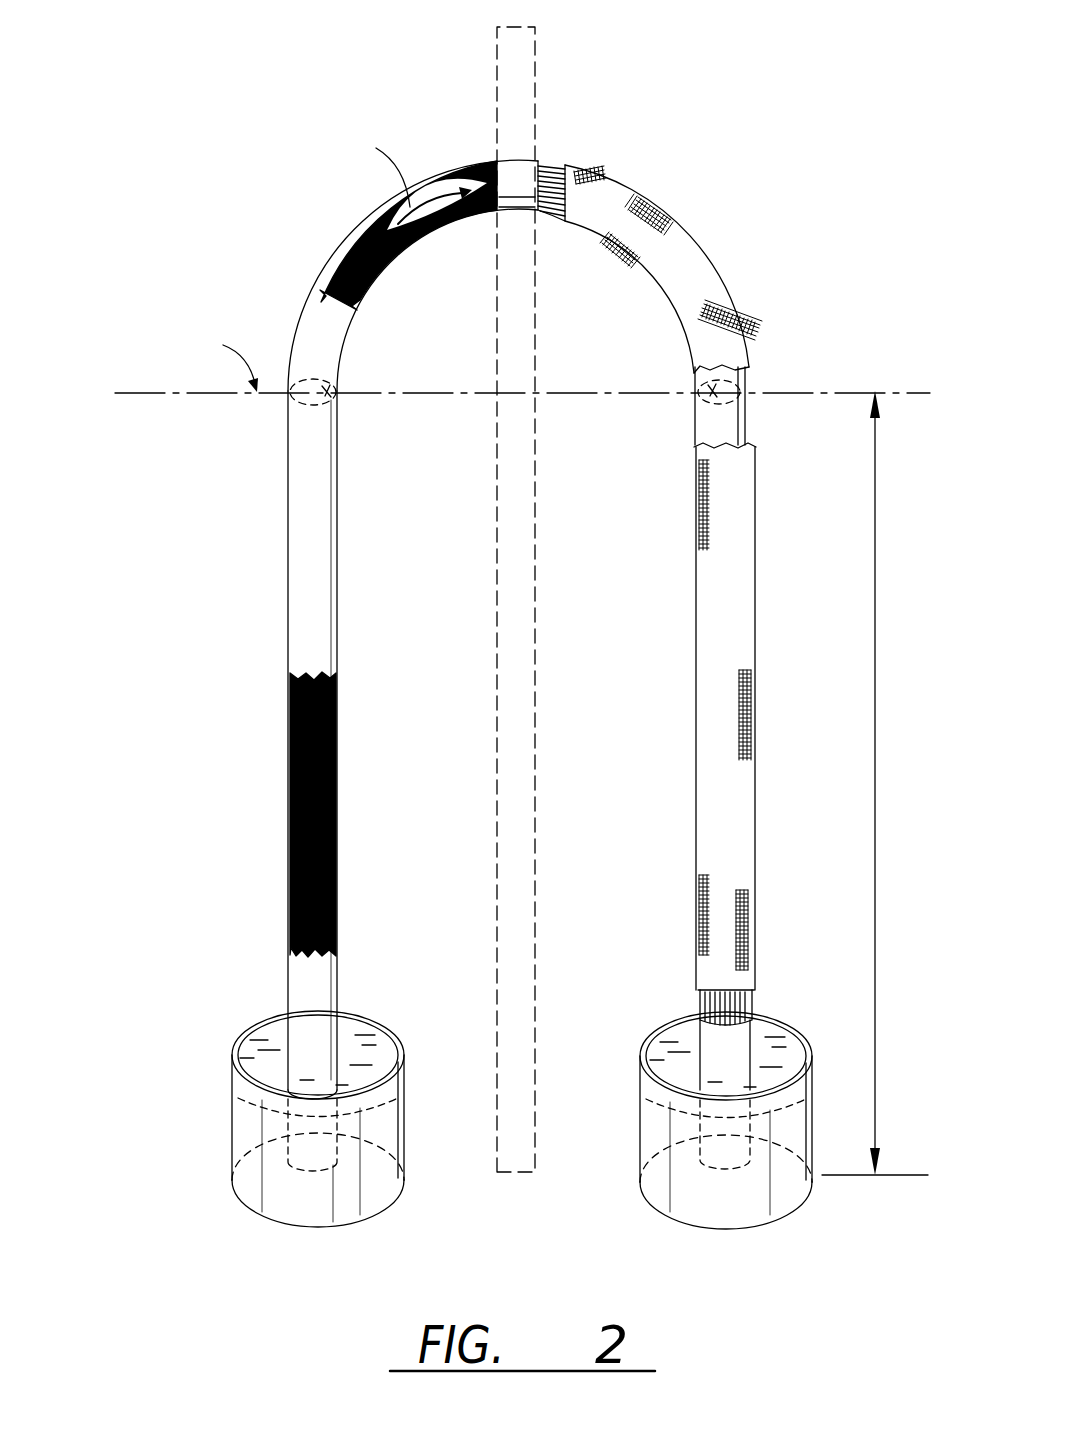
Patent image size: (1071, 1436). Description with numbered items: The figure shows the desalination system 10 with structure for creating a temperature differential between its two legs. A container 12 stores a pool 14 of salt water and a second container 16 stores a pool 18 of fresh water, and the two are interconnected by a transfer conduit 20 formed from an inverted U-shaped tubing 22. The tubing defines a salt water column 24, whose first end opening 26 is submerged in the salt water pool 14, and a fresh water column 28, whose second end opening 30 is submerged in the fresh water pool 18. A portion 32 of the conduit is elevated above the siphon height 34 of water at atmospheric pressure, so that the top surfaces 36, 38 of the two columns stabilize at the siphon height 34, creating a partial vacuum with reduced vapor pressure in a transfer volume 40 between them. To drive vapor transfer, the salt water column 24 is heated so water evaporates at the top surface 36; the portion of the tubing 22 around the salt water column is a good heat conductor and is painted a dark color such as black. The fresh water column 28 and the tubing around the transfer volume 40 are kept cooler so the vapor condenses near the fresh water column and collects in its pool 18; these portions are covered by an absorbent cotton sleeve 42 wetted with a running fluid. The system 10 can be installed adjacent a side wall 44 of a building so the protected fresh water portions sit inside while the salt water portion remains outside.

The desalination system 10 is at (692, 130).
The container 12 is at (287, 1091).
The pool of salt water 14 is at (376, 1051).
The container 16 is at (700, 1108).
The pool of fresh water 18 is at (777, 1051).
The transfer conduit 20 is at (276, 743).
The inverted U-shaped tubing 22 is at (400, 253).
The salt water column 24 is at (325, 560).
The first end opening 26 is at (253, 1207).
The fresh water column 28 is at (732, 425).
The second end opening 30 is at (718, 1161).
The portion 32 is at (458, 134).
The siphon height 34 is at (895, 393).
The top surface 36 is at (335, 370).
The top surface 38 is at (693, 370).
The transfer volume 40 is at (522, 165).
The cotton sleeve 42 is at (744, 658).
The side wall 44 is at (525, 50).